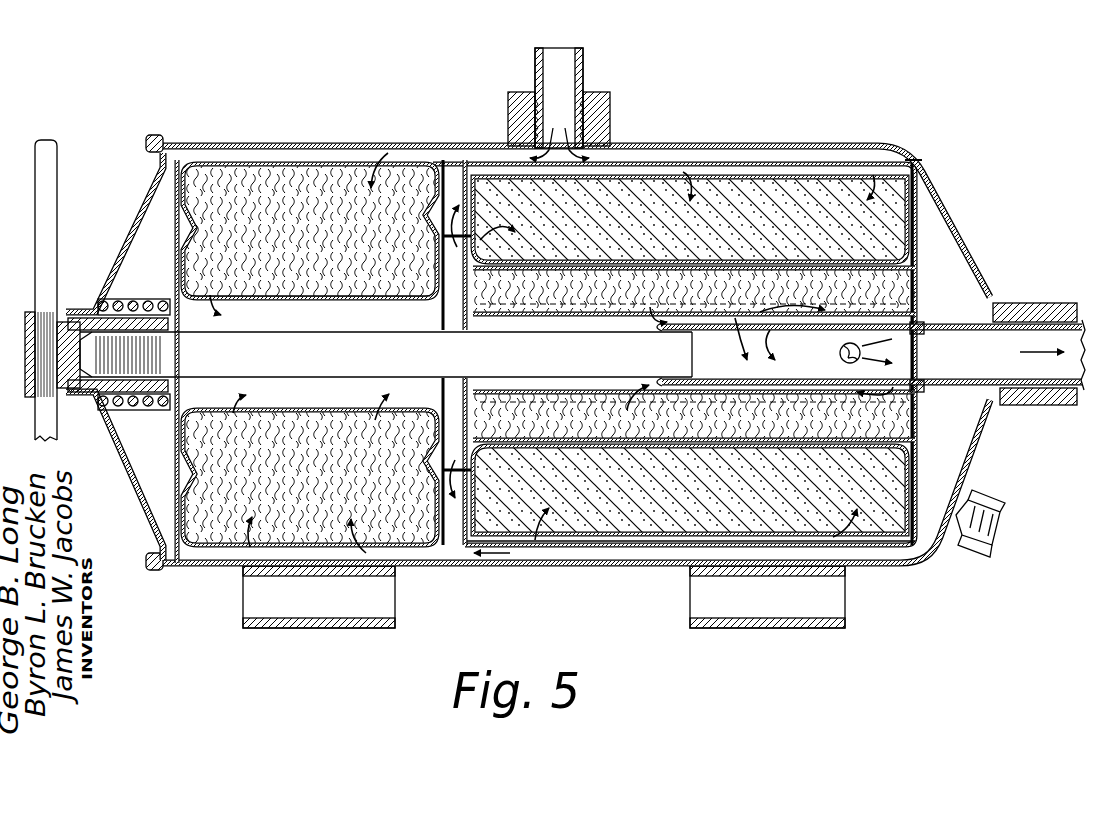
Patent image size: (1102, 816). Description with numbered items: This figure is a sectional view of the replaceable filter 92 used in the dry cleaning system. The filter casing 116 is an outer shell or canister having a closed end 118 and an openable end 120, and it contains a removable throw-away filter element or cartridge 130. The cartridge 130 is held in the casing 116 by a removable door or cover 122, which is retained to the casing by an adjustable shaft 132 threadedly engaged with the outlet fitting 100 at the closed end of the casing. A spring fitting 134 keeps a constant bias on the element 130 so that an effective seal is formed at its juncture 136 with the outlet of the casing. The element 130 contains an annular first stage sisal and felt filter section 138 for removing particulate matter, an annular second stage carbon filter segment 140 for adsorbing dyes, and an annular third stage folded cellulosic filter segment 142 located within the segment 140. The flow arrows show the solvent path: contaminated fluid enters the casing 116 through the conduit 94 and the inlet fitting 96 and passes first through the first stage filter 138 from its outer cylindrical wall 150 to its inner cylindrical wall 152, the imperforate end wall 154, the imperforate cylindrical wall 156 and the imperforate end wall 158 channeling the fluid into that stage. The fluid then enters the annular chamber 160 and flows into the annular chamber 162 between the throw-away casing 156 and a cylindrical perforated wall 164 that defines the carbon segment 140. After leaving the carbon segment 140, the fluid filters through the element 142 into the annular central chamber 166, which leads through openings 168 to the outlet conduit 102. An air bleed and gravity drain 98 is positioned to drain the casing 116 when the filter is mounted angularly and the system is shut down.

The filter 92 is at (397, 143).
The conduit 94 is at (534, 63).
The inlet fitting 96 is at (603, 93).
The air bleed and gravity drain 98 is at (963, 538).
The outlet fitting 100 is at (1028, 305).
The outlet conduit 102 is at (1037, 380).
The filter casing 116 is at (860, 142).
The closed end 118 is at (972, 229).
The openable end 120 is at (157, 134).
The removable door 122 is at (128, 249).
The throw-away filter element 130 is at (737, 162).
The adjustable shaft 132 is at (348, 354).
The spring fitting 134 is at (134, 301).
The juncture 136 is at (920, 393).
The first stage filter section 138 is at (218, 545).
The carbon filter segment 140 is at (763, 196).
The third stage filter segment 142 is at (590, 312).
The outer cylindrical wall 150 is at (343, 164).
The inner cylindrical wall 152 is at (300, 299).
The imperforate end wall 154 is at (913, 192).
The imperforate cylindrical wall 156 is at (523, 546).
The imperforate end wall 158 is at (173, 413).
The annular chamber 160 is at (355, 302).
The annular chamber 162 is at (587, 541).
The cylindrical perforated wall 164 is at (642, 541).
The annular central chamber 166 is at (655, 383).
The openings 168 is at (839, 353).